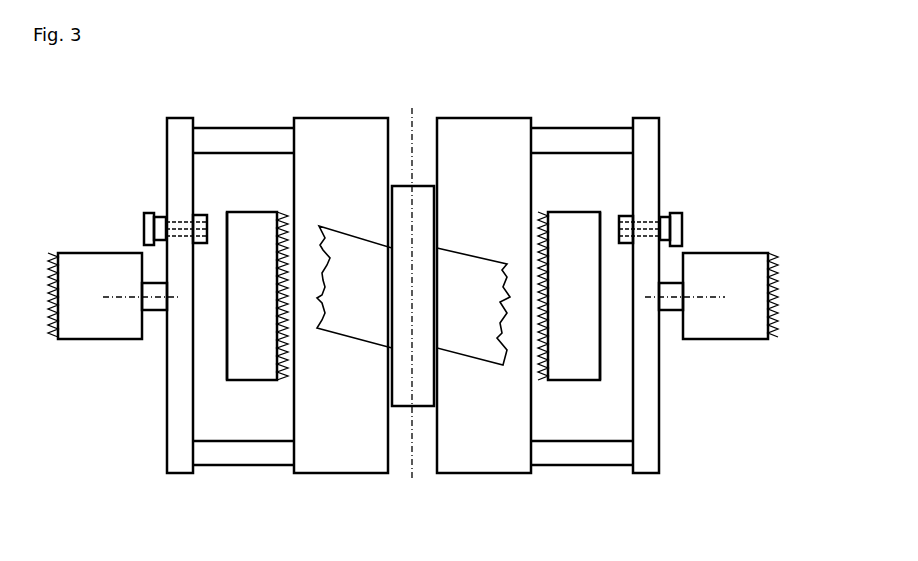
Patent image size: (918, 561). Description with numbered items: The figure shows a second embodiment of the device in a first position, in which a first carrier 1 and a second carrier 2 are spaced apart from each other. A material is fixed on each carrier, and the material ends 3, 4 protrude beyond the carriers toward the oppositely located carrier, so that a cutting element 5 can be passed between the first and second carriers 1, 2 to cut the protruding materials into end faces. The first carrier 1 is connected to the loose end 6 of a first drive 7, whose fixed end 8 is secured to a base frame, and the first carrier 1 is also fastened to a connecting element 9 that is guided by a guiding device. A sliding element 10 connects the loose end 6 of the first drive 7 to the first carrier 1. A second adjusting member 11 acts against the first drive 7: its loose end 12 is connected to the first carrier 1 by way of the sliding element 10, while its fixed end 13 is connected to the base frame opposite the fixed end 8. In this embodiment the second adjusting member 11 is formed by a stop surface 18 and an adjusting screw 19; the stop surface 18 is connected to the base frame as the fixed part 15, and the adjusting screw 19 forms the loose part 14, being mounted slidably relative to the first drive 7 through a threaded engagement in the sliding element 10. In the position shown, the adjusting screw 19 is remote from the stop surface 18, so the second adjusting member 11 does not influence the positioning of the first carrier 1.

The first carrier 1 is at (320, 136).
The second carrier 2 is at (457, 130).
The material end 3 is at (390, 258).
The material end 4 is at (440, 332).
The cutting element 5 is at (378, 172).
The loose end 6 is at (160, 312).
The first drive 7 is at (72, 248).
The fixed end 8 is at (50, 325).
The connecting element 9 is at (277, 128).
The sliding element 10 is at (180, 476).
The second adjusting member 11 is at (223, 222).
The loose end 12 is at (209, 218).
The fixed end 13 is at (278, 207).
The loose part 14 is at (160, 212).
The fixed part 15 is at (238, 225).
The stop surface 18 is at (222, 280).
The adjusting screw 19 is at (140, 222).